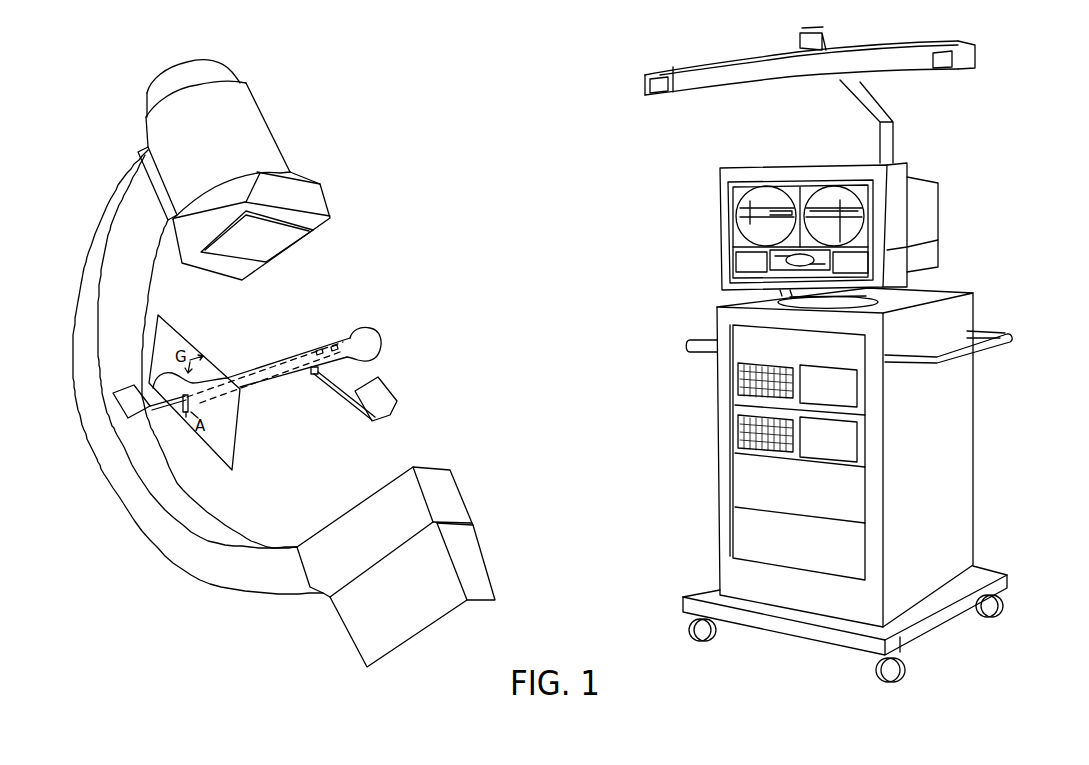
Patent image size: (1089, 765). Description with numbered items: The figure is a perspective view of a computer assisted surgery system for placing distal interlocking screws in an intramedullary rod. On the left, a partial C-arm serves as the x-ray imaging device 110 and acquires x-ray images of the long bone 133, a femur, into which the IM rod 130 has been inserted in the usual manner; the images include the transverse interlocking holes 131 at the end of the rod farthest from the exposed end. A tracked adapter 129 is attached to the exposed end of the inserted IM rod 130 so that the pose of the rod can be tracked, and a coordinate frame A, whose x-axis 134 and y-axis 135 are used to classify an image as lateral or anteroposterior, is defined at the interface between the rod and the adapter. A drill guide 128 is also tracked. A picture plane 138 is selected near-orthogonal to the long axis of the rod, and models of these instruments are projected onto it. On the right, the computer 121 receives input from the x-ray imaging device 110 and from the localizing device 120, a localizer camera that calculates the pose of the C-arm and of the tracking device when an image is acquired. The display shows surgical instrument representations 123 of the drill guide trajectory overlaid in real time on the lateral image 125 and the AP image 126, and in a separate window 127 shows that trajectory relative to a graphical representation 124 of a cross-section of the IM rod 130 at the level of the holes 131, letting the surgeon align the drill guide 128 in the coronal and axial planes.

The x-ray imaging device 110 is at (94, 154).
The localizing device 120 is at (870, 428).
The computer 121 is at (728, 383).
The surgical instrument representations 123 is at (716, 193).
The graphical representation of a cross-section of the IM rod 124 is at (865, 268).
The lateral x-ray image 125 is at (774, 193).
The AP x-ray image 126 is at (833, 196).
The separate window 127 is at (752, 274).
The drill guide 128 is at (333, 403).
The tracked adapter 129 is at (159, 420).
The IM rod 130 is at (292, 357).
The transverse interlocking holes 131 is at (336, 344).
The long bone 133 is at (381, 334).
The x-axis of coordinate frame A 134 is at (208, 405).
The y-axis of coordinate frame A 135 is at (195, 412).
The picture plane 138 is at (180, 331).